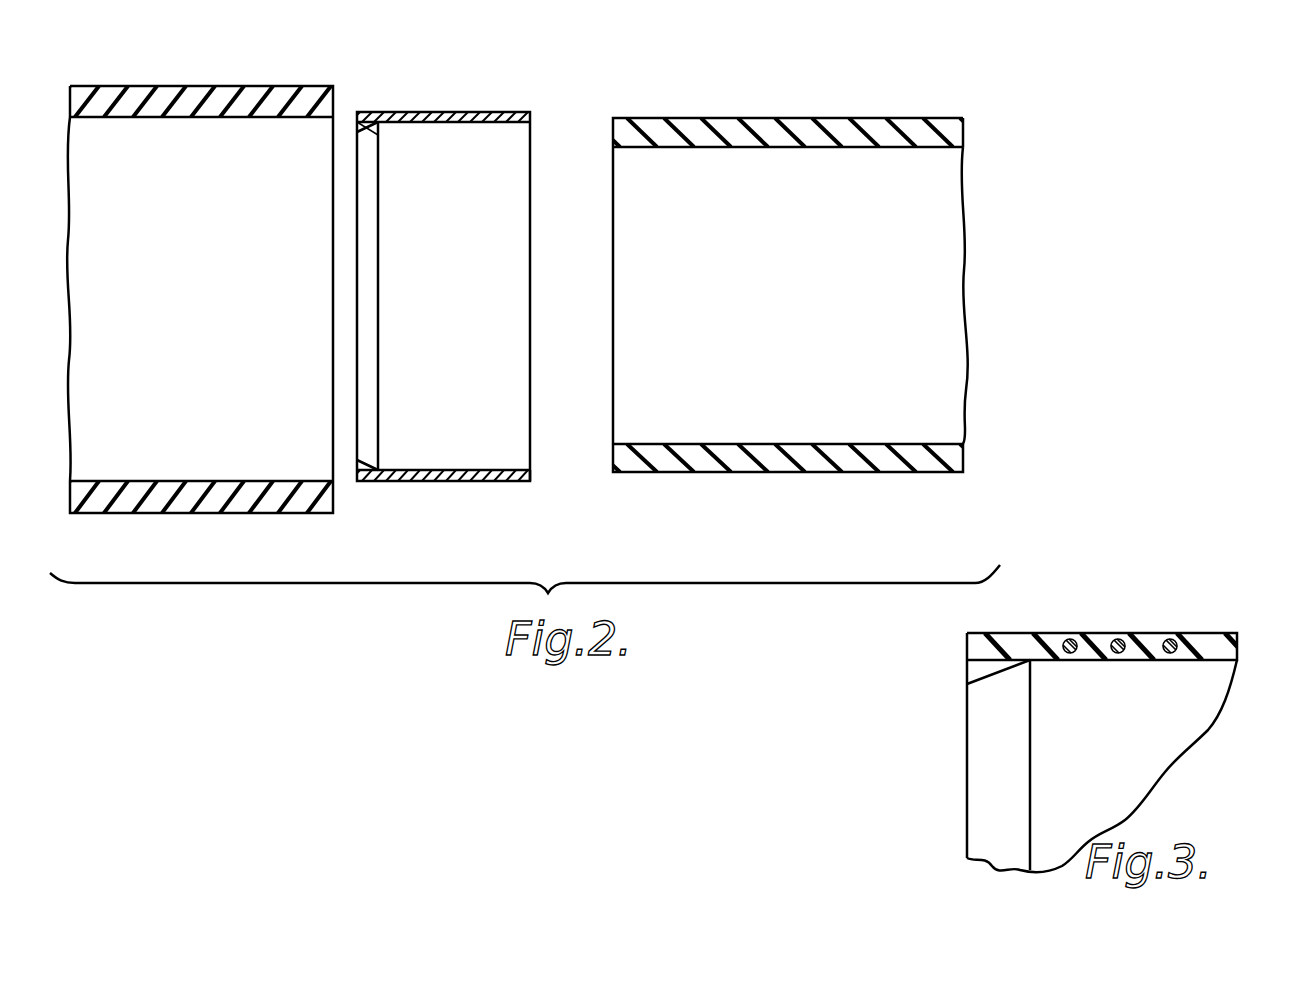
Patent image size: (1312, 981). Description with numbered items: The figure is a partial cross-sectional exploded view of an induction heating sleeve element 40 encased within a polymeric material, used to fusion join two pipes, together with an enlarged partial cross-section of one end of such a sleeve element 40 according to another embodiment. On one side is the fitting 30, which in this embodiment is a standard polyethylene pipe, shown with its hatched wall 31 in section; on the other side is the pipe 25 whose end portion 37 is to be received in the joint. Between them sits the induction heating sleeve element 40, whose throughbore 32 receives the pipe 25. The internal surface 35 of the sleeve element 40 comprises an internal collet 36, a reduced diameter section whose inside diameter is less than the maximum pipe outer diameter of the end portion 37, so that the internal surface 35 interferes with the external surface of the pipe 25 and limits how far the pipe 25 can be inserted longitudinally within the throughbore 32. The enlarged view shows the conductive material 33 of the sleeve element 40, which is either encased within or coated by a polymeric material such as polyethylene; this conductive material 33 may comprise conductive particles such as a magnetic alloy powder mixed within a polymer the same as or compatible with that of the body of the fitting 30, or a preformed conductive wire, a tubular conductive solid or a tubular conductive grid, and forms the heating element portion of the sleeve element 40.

In FIG. 2, the pipe 25 is at (820, 458).
In FIG. 2, the fitting 30 is at (300, 66).
In FIG. 2, the tube wall 31 is at (177, 145).
In FIG. 2, the throughbore 32 is at (455, 350).
In FIG. 2, the conductive material 33 is at (440, 482).
In FIG. 3, the conductive material 33 is at (1070, 638).
In FIG. 2, the internal surface 35 is at (472, 124).
In FIG. 3, the internal surface 35 is at (1112, 662).
In FIG. 2, the internal collet 36 is at (378, 124).
In FIG. 3, the internal collet 36 is at (1003, 672).
In FIG. 2, the end portion 37 is at (700, 92).
In FIG. 2, the induction heating sleeve element 40 is at (496, 482).